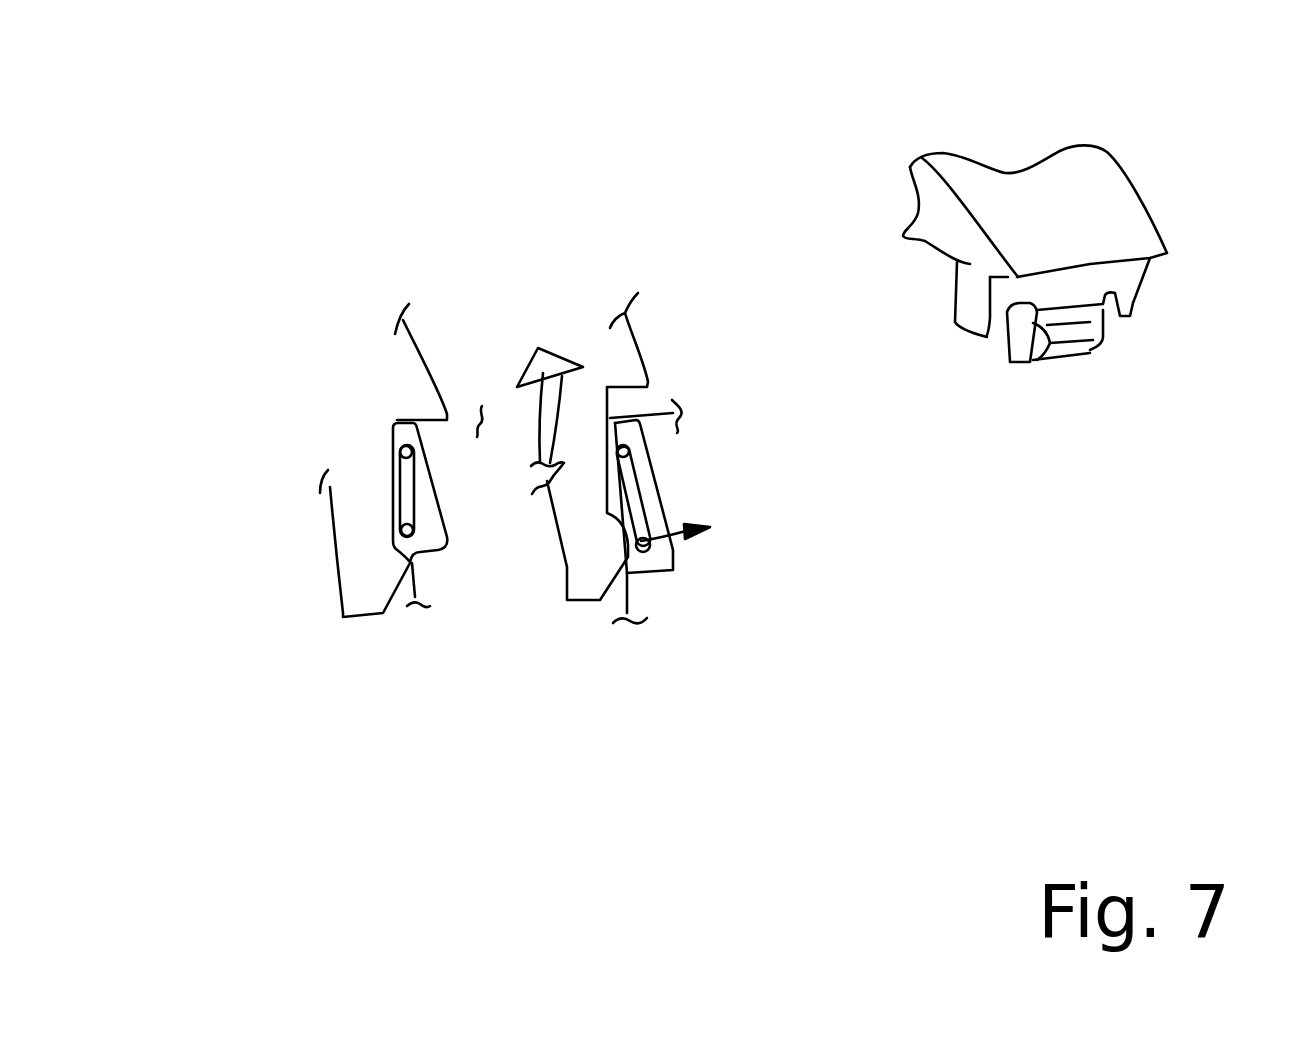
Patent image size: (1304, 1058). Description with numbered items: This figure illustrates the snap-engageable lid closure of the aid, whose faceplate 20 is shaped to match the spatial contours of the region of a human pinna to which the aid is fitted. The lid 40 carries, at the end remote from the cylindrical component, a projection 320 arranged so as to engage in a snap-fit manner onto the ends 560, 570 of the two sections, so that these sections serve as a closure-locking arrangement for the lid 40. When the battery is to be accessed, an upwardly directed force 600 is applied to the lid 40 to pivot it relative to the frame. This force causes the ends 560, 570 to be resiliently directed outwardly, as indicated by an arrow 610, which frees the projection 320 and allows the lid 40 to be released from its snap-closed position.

The faceplate 20 is at (513, 498).
The lid 40 is at (1102, 192).
The projection 320 is at (367, 553).
The end of section 560 is at (414, 468).
The end of section 570 is at (400, 485).
The upwardly directed force 600 is at (537, 363).
The arrow 610 is at (673, 520).